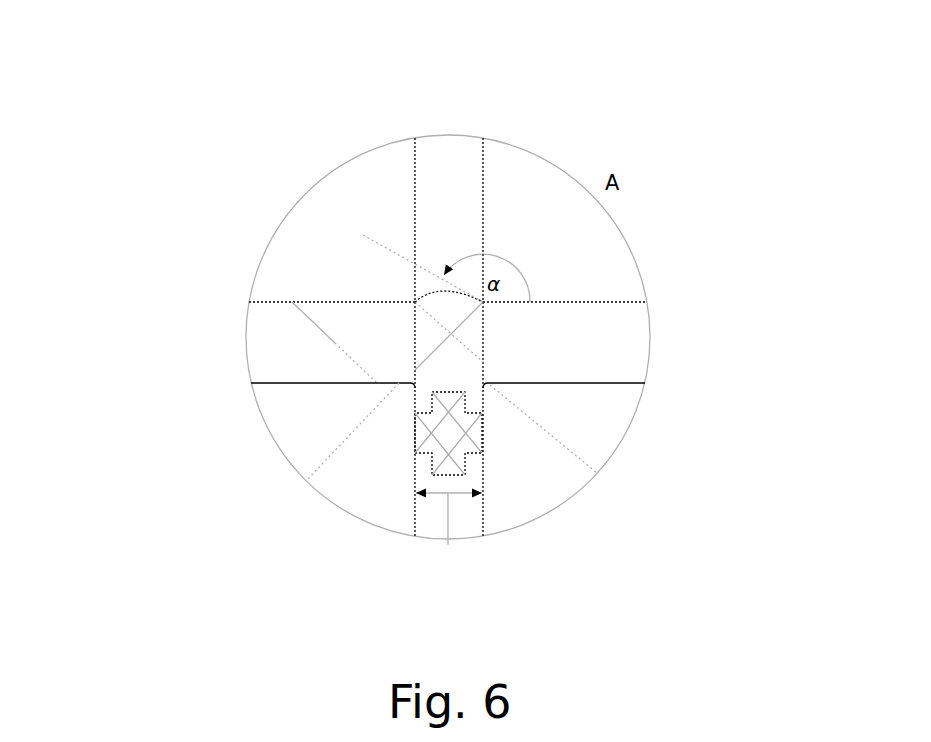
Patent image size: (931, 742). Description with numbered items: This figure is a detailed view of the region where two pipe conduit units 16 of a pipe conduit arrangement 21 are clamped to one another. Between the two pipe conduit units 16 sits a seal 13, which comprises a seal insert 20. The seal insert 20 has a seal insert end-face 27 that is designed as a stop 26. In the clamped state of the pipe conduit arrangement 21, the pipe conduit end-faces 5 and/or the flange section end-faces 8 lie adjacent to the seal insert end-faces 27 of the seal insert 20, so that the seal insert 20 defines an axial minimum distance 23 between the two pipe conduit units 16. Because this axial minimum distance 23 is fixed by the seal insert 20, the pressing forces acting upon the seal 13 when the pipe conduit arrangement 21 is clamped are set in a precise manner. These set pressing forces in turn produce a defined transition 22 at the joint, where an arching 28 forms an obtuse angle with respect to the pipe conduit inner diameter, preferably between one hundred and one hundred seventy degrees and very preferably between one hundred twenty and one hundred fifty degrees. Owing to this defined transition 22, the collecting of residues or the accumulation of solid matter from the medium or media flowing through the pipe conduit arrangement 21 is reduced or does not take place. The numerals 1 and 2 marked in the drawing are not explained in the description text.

The housing part 1 is at (263, 346).
The housing part 2 is at (367, 507).
The pipe conduit end-face 5 is at (477, 367).
The flange section end-face 8 is at (417, 522).
The seal 13 is at (475, 475).
The pipe conduit unit 16 is at (188, 410).
The seal insert 20 is at (417, 433).
The pipe conduit arrangement 21 is at (210, 130).
The defined transition 22 is at (420, 290).
The axial minimum distance 23 is at (448, 545).
The stop 26 is at (408, 423).
The seal insert end-face 27 is at (417, 448).
The arching 28 is at (432, 285).